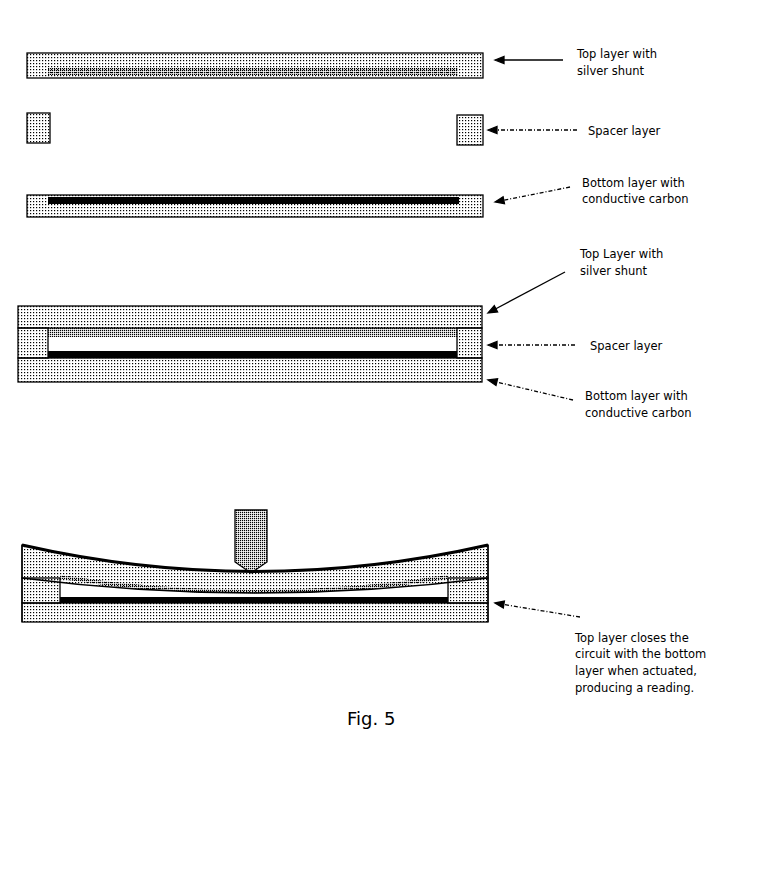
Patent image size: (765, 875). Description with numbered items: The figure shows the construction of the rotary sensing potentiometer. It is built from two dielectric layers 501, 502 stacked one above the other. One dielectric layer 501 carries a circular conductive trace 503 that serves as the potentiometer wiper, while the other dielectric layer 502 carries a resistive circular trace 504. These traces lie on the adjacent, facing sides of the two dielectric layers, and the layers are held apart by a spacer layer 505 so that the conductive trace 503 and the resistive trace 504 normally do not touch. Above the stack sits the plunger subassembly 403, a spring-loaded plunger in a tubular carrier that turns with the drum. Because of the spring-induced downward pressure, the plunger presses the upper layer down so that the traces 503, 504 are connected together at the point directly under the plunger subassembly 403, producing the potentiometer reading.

The dielectric layer 501 is at (255, 47).
The dielectric layer 502 is at (255, 226).
The circular conductive trace 503 is at (163, 85).
The resistive circular trace 504 is at (195, 189).
The spacer layer 505 is at (59, 130).
The plunger subassembly 403 is at (277, 525).